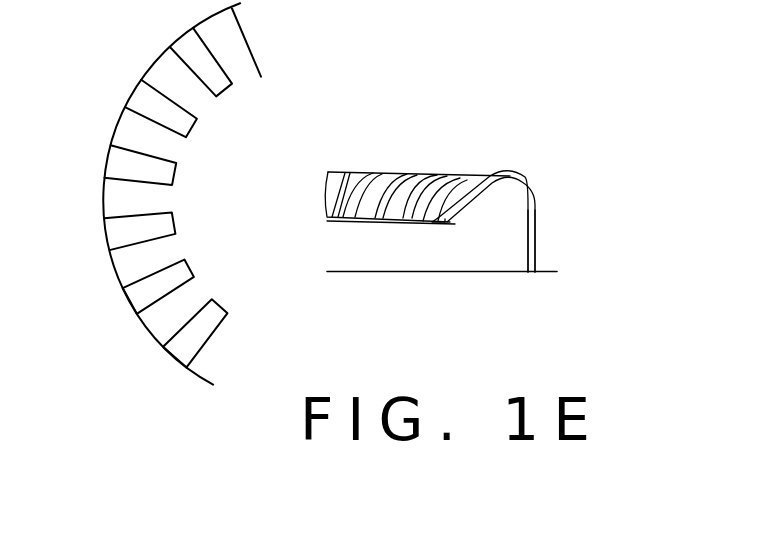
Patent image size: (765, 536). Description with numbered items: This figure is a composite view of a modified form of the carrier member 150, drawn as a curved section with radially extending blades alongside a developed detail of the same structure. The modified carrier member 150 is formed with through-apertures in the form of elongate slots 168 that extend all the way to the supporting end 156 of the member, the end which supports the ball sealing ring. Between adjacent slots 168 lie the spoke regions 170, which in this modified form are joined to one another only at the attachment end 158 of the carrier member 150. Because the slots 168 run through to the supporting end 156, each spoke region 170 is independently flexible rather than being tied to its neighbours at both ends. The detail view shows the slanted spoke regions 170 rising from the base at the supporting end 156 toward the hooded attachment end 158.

The carrier member 150 is at (358, 83).
The supporting end 156 is at (177, 177).
The attachment end 158 is at (527, 272).
The elongate slots 168 is at (187, 91).
The spoke regions 170 is at (173, 122).